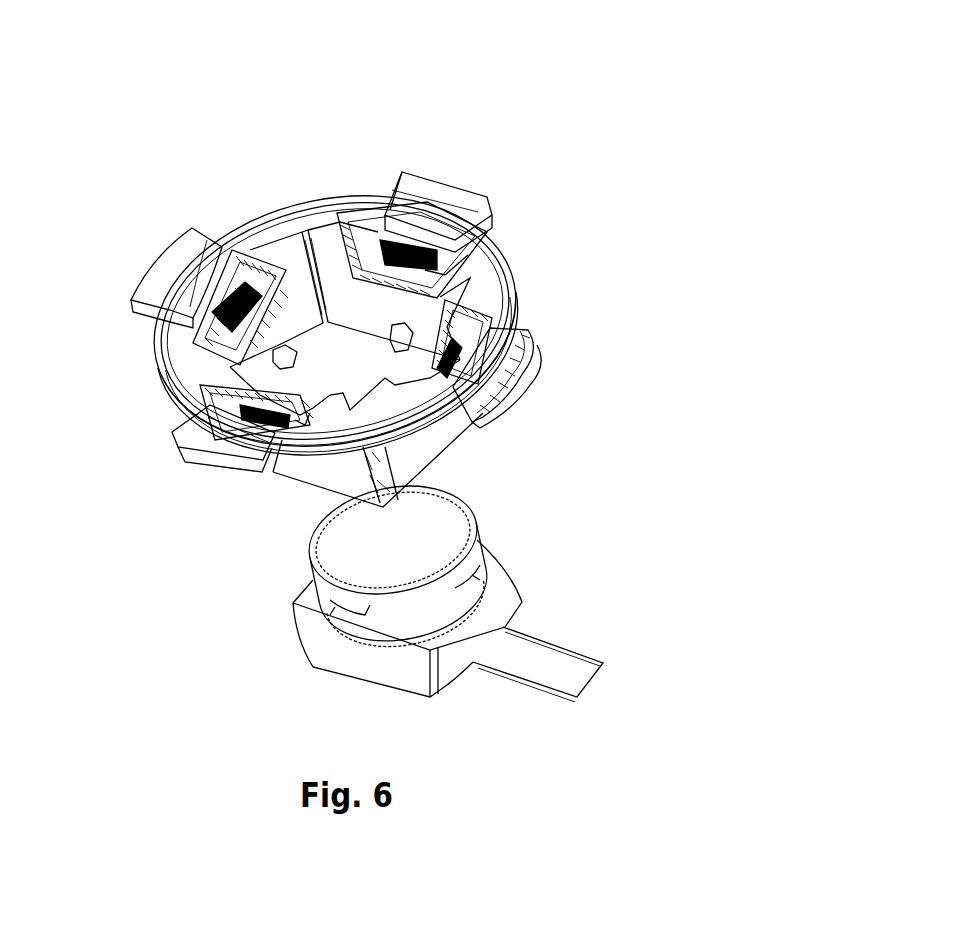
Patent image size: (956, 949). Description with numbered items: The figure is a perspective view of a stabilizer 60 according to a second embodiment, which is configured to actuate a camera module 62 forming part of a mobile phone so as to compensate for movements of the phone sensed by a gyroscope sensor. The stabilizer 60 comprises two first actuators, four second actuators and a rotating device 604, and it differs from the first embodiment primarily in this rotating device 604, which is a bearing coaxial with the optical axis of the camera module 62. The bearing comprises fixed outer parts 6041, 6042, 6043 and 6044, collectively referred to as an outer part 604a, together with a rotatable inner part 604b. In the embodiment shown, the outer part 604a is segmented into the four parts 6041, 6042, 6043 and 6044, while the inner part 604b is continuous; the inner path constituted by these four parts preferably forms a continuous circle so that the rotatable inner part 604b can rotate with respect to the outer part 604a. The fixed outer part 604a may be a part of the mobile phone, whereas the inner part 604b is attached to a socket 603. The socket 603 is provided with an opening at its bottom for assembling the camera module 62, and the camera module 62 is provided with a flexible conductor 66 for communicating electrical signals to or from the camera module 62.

The stabilizer 60 is at (616, 41).
The rotating device 604 is at (155, 175).
The outer part 604a is at (402, 150).
The inner part 604b is at (283, 213).
The fixed outer part 6041 is at (150, 273).
The fixed outer part 6042 is at (215, 455).
The fixed outer part 6043 is at (522, 383).
The fixed outer part 6044 is at (442, 175).
The socket 603 is at (312, 488).
The camera module 62 is at (490, 540).
The flexible conductor 66 is at (560, 645).